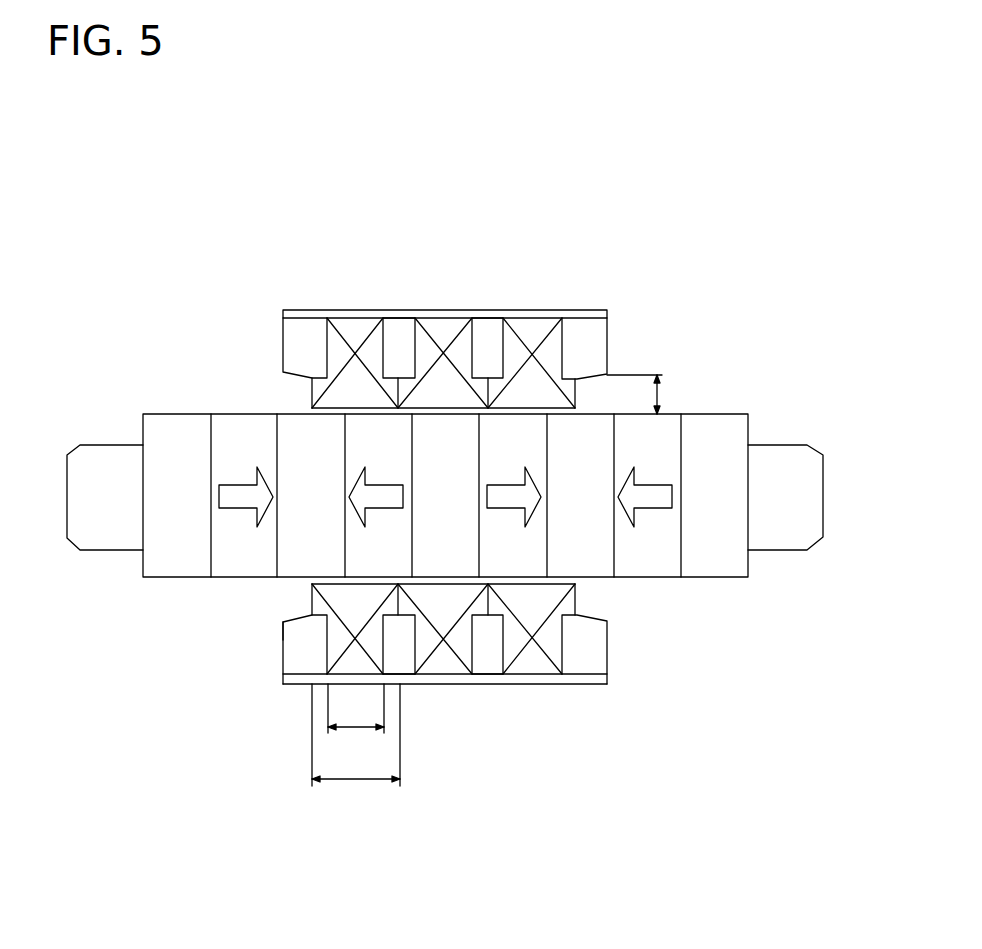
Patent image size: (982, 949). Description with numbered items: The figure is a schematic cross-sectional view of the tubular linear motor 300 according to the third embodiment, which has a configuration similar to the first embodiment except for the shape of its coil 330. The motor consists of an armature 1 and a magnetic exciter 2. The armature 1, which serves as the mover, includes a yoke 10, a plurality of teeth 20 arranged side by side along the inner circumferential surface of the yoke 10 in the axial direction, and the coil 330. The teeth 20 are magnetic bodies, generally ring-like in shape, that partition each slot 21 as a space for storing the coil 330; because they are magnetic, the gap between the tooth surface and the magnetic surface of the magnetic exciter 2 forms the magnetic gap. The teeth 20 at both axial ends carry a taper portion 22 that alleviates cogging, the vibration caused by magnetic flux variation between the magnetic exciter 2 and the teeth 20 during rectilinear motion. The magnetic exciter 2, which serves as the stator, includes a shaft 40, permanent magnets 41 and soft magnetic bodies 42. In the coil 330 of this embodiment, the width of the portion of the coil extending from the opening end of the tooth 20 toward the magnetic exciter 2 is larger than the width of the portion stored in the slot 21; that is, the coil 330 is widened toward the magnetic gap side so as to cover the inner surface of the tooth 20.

The tubular linear motor 300 is at (170, 177).
The armature 1 is at (416, 308).
The yoke 10 is at (528, 310).
The teeth 20 is at (400, 330).
The coil 330 is at (447, 340).
The slot 21 is at (560, 650).
The taper portion 22 is at (295, 619).
The magnetic exciter 2 is at (181, 411).
The permanent magnet 41 is at (377, 558).
The soft magnetic body 42 is at (582, 562).
The shaft 40 is at (92, 463).